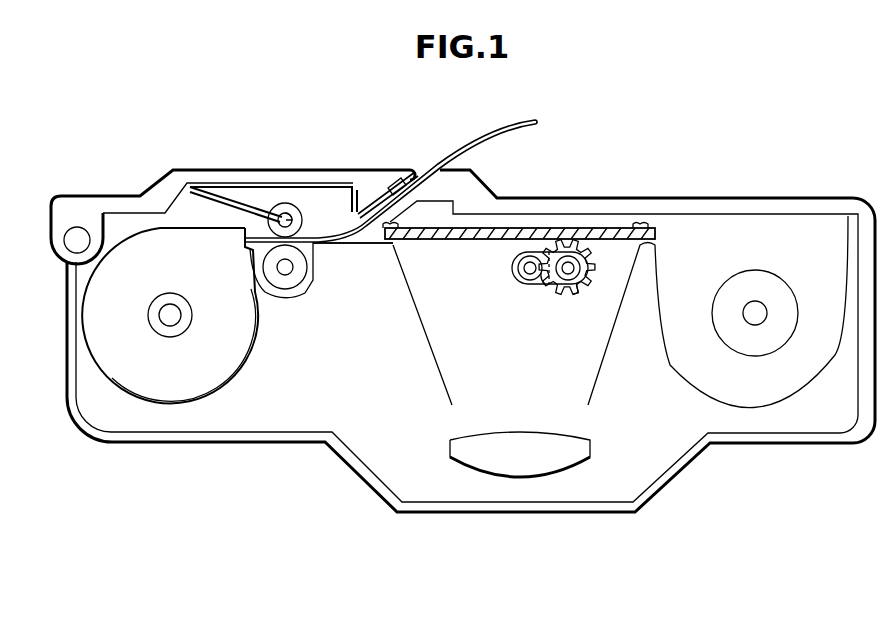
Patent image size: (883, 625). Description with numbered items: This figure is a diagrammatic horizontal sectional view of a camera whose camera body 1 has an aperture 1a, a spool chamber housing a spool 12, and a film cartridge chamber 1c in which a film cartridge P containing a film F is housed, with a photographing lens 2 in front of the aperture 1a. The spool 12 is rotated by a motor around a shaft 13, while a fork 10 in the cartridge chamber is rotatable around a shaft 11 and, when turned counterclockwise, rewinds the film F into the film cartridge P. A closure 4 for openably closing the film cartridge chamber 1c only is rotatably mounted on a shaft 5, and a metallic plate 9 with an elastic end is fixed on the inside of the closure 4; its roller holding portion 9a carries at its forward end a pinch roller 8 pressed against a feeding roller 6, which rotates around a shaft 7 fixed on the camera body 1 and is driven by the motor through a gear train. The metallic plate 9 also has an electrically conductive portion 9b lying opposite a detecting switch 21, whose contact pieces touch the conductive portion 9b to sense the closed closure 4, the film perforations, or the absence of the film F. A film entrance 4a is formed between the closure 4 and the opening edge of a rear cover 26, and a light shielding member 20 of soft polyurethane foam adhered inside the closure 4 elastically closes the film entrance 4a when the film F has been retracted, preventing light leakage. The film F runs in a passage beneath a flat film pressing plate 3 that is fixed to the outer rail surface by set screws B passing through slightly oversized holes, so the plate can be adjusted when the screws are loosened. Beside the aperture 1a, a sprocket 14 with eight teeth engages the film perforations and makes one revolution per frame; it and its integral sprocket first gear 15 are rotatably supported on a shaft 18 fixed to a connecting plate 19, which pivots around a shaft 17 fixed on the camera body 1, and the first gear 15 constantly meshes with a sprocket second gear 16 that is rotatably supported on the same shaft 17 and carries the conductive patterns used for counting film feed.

The camera body 1 is at (673, 450).
The aperture 1a is at (420, 285).
The film cartridge chamber 1c is at (267, 290).
The photographing lens 2 is at (530, 467).
The film pressing plate 3 is at (525, 228).
The closure 4 is at (209, 168).
The film entrance 4a is at (425, 162).
The shaft 5 is at (73, 240).
The feeding roller 6 is at (293, 283).
The shaft 7 is at (293, 266).
The pinch roller 8 is at (294, 208).
The metallic plate 9 is at (278, 184).
The roller holding portion 9a is at (242, 207).
The electrically conductive portion 9b is at (373, 207).
The fork 10 is at (160, 328).
The shaft 11 is at (175, 317).
The spool 12 is at (787, 303).
The shaft 13 is at (757, 305).
The sprocket 14 is at (560, 297).
The sprocket first gear 15 is at (590, 262).
The sprocket second gear 16 is at (518, 268).
The shaft 17 is at (522, 278).
The shaft 18 is at (580, 290).
The connecting plate 19 is at (532, 286).
The light shielding member 20 is at (398, 180).
The detecting switch 21 is at (378, 230).
The rear cover 26 is at (716, 198).
The set screw B is at (427, 225).
The film F is at (522, 122).
The film cartridge P is at (92, 327).